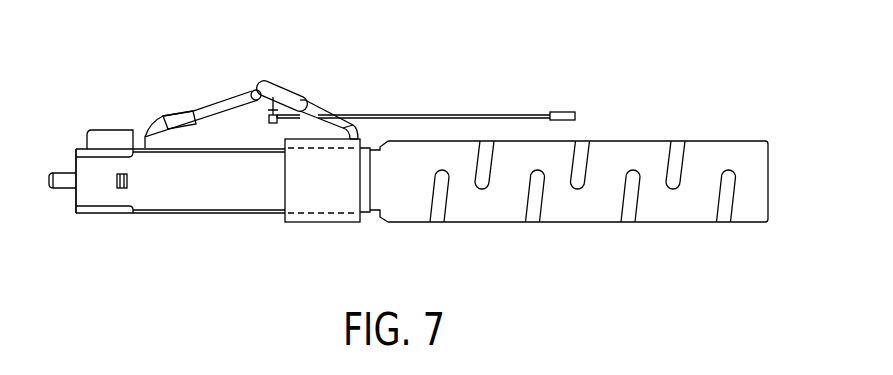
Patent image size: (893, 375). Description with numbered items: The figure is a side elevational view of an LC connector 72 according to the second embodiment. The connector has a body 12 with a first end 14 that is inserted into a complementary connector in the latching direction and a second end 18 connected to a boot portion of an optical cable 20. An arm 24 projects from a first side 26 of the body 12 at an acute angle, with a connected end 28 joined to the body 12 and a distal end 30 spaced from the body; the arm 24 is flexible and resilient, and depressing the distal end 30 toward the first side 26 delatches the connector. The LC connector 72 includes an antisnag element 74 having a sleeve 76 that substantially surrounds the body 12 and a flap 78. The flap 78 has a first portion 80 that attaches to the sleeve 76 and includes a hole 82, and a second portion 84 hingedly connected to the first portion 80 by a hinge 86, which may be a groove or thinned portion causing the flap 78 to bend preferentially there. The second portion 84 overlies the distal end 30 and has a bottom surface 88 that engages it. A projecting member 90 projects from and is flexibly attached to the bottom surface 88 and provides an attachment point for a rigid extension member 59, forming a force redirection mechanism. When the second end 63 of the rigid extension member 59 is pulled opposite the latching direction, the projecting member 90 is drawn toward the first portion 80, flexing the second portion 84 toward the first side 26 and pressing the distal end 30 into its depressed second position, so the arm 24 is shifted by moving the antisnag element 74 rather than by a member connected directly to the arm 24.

The body 12 is at (90, 165).
The first end 14 is at (75, 198).
The second end 18 is at (366, 207).
The optical cable 20 is at (578, 213).
The arm 24 is at (220, 107).
The first side 26 is at (83, 150).
The connected end 28 is at (115, 140).
The distal end 30 is at (257, 97).
The rigid extension member 59 is at (465, 117).
The second end 63 is at (562, 117).
The LC connector 72 is at (166, 77).
The antisnag element 74 is at (342, 90).
The sleeve 76 is at (323, 222).
The flap 78 is at (302, 76).
The first portion 80 is at (365, 118).
The hole 82 is at (337, 110).
The second portion 84 is at (260, 85).
The hinge 86 is at (310, 103).
The bottom surface 88 is at (255, 90).
The projecting member 90 is at (263, 115).